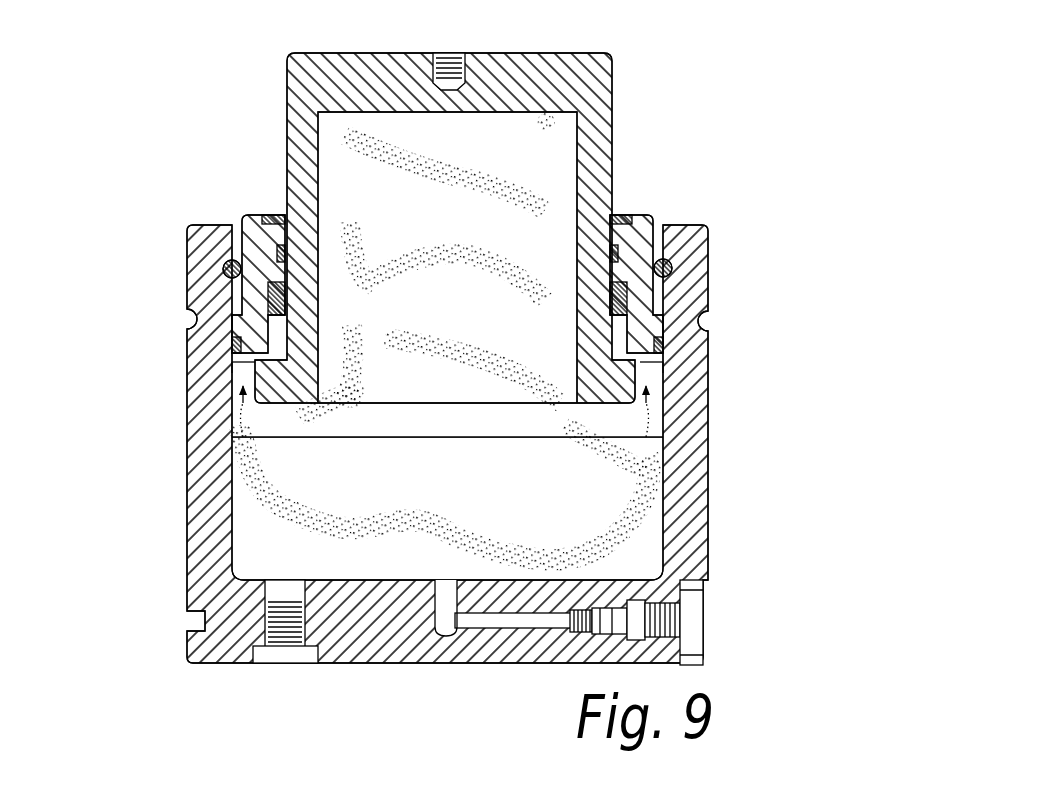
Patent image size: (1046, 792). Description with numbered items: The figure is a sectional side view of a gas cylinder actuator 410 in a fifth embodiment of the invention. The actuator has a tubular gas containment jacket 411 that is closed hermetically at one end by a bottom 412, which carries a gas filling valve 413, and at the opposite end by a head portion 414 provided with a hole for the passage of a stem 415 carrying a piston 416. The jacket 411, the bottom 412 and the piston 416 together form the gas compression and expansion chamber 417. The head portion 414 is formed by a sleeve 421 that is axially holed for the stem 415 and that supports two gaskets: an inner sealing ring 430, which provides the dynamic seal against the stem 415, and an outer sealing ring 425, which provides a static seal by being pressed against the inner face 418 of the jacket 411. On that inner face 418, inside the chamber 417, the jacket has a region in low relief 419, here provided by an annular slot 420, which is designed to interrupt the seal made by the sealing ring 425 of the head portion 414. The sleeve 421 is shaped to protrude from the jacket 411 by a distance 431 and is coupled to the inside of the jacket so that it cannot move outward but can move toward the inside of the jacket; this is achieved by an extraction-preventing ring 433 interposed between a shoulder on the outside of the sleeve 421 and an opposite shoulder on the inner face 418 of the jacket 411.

The gas cylinder actuator 410 is at (188, 160).
The tubular gas containment jacket 411 is at (683, 459).
The bottom 412 is at (430, 660).
The gas filling valve 413 is at (673, 623).
The head portion 414 is at (246, 210).
The stem 415 is at (597, 117).
The piston 416 is at (640, 368).
The gas compression and expansion chamber 417 is at (392, 540).
The inner face of the jacket 418 is at (250, 530).
The region in low relief 419 is at (232, 403).
The annular slot 420 is at (240, 370).
The sleeve 421 is at (645, 318).
The sealing ring 425 is at (232, 343).
The inner sealing ring 430 is at (643, 290).
The distance 431 is at (650, 212).
The extraction-preventing ring 433 is at (223, 265).